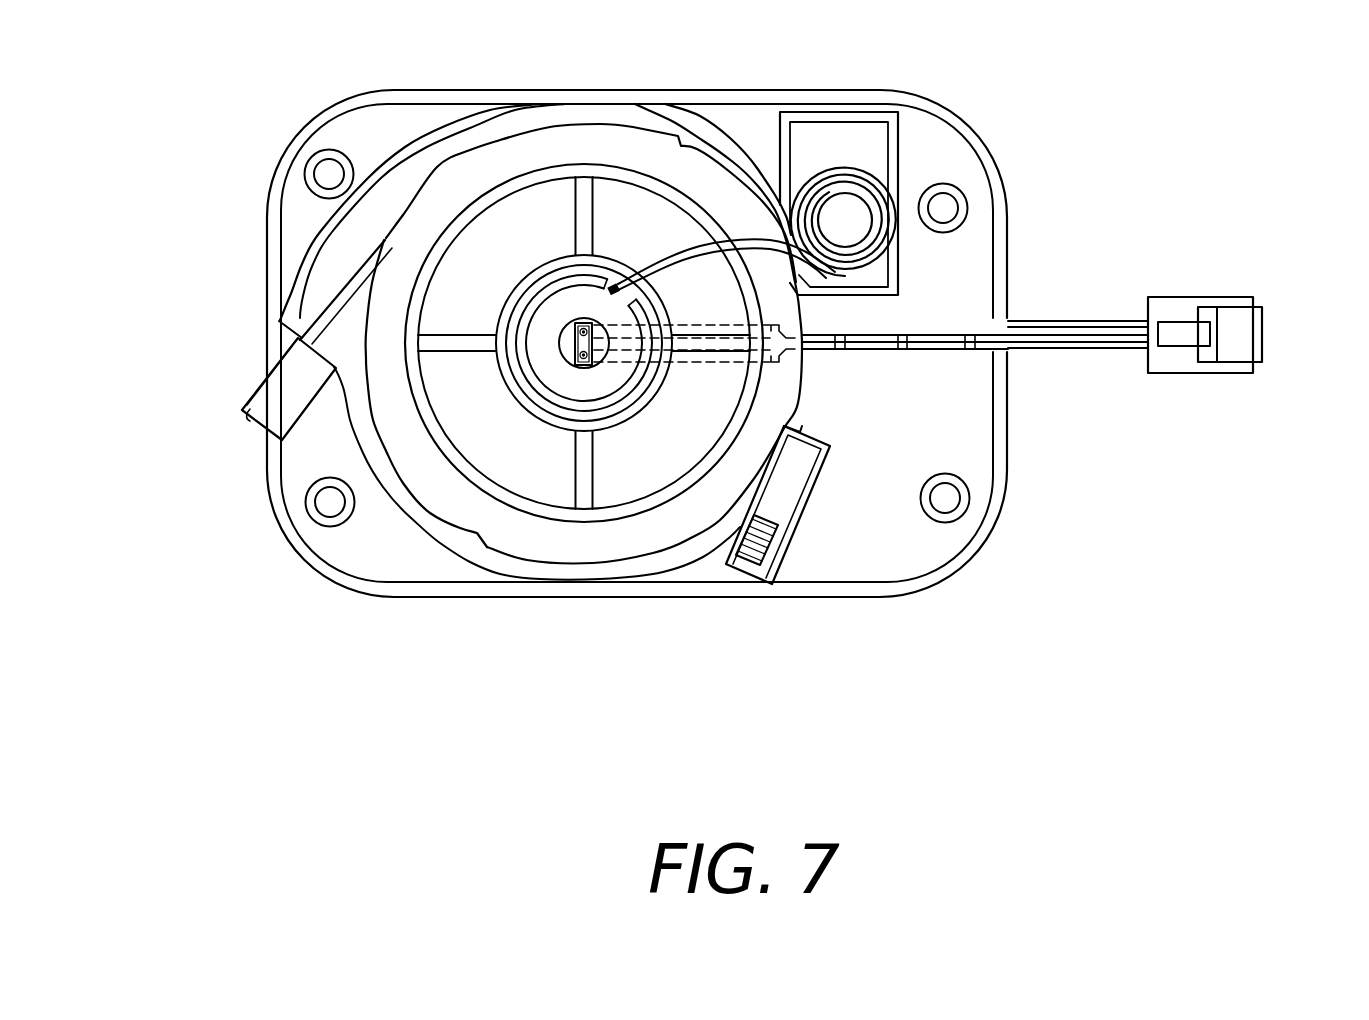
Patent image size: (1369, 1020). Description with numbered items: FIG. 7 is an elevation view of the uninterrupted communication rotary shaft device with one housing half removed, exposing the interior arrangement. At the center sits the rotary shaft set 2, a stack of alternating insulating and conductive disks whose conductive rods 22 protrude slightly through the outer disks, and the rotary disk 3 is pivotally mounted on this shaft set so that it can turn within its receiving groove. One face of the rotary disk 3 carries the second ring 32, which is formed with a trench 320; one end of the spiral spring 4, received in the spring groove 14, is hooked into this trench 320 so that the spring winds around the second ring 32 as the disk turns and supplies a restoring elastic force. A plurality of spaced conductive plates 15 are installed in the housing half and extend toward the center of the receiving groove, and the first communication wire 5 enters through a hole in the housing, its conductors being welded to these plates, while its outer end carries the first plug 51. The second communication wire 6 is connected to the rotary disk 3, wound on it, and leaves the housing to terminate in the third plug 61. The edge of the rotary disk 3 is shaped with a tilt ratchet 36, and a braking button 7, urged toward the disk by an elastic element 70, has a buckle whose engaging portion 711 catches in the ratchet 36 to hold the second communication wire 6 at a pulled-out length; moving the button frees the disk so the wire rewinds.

The rotary shaft set 2 is at (573, 312).
The rotary disk 3 is at (553, 145).
The spiral spring 4 is at (893, 198).
The first communication wire 5 is at (1073, 335).
The second communication wire 6 is at (338, 302).
The braking button 7 is at (814, 547).
The spring groove 14 is at (838, 148).
The conductive plates 15 is at (688, 357).
The conductive rods 22 is at (577, 352).
The second ring 32 is at (553, 400).
The tilt ratchet 36 is at (800, 404).
The first plug 51 is at (1250, 342).
The third plug 61 is at (278, 408).
The elastic element 70 is at (752, 557).
The trench 320 is at (612, 283).
The tab 711 is at (788, 440).